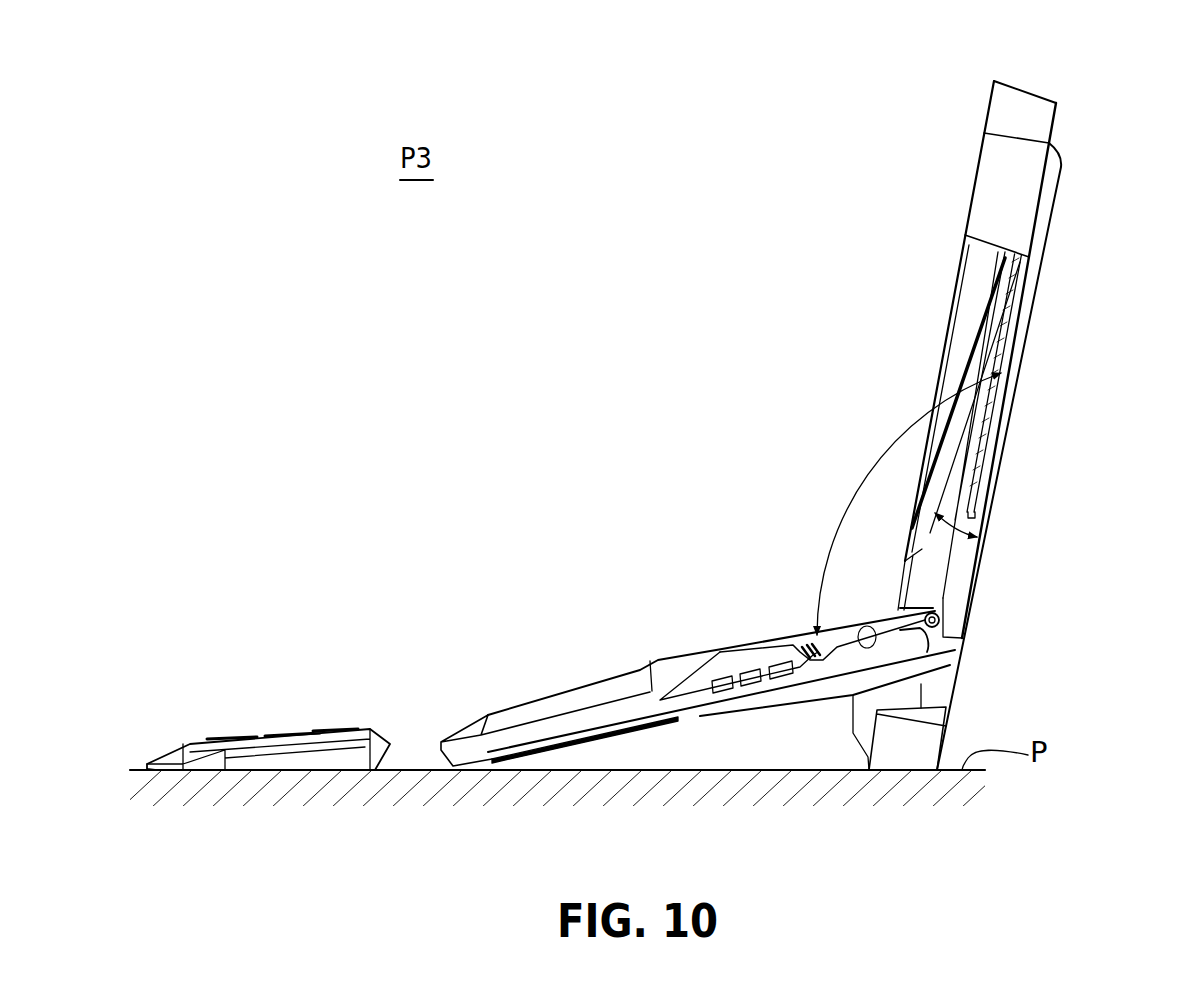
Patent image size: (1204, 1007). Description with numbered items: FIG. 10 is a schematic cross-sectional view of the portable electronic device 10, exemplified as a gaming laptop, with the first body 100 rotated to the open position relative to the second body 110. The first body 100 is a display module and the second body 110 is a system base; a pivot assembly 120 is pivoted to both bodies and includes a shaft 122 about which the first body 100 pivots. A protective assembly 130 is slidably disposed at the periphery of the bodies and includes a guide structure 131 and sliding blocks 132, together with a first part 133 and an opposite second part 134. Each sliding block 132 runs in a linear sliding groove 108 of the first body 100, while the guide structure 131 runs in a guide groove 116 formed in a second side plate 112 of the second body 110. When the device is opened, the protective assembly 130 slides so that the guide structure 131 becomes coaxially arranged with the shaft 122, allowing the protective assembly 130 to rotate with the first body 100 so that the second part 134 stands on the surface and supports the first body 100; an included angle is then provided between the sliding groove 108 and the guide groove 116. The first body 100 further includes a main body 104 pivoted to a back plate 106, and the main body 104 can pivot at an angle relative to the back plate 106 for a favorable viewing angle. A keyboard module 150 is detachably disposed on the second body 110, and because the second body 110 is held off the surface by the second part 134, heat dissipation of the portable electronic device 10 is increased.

The portable electronic device 10 is at (822, 479).
The first body 100 is at (1051, 359).
The main body 104 is at (948, 448).
The back plate 106 is at (1047, 211).
The sliding groove 108 is at (1007, 312).
The second body 110 is at (737, 708).
The second side plate 112 is at (842, 660).
The guide groove 116 is at (857, 626).
The pivot assembly 120 is at (1015, 608).
The shaft 122 is at (947, 617).
The protective assembly 130 is at (1028, 415).
The guide structure 131 is at (932, 645).
The sliding block 132 is at (993, 405).
The first part 133 is at (1022, 108).
The second part 134 is at (920, 742).
The keyboard module 150 is at (277, 762).